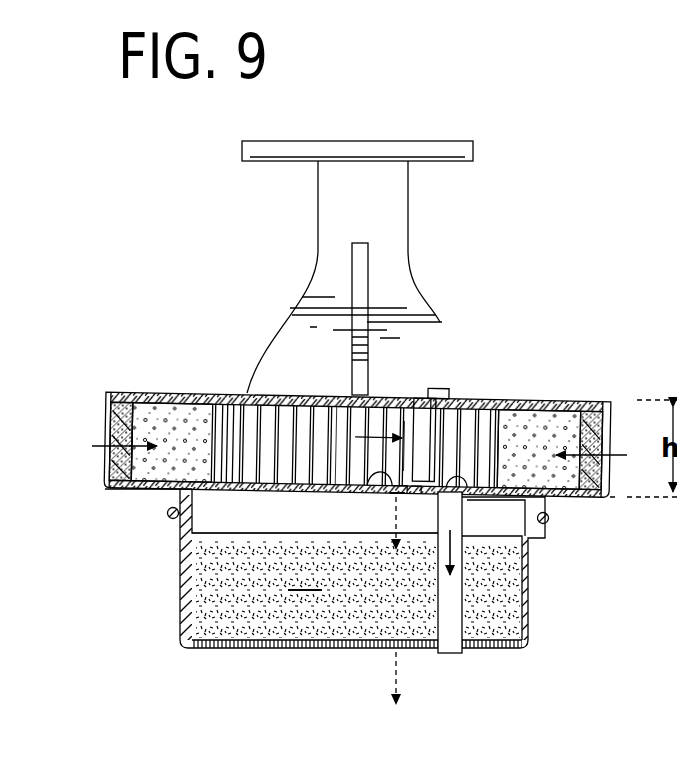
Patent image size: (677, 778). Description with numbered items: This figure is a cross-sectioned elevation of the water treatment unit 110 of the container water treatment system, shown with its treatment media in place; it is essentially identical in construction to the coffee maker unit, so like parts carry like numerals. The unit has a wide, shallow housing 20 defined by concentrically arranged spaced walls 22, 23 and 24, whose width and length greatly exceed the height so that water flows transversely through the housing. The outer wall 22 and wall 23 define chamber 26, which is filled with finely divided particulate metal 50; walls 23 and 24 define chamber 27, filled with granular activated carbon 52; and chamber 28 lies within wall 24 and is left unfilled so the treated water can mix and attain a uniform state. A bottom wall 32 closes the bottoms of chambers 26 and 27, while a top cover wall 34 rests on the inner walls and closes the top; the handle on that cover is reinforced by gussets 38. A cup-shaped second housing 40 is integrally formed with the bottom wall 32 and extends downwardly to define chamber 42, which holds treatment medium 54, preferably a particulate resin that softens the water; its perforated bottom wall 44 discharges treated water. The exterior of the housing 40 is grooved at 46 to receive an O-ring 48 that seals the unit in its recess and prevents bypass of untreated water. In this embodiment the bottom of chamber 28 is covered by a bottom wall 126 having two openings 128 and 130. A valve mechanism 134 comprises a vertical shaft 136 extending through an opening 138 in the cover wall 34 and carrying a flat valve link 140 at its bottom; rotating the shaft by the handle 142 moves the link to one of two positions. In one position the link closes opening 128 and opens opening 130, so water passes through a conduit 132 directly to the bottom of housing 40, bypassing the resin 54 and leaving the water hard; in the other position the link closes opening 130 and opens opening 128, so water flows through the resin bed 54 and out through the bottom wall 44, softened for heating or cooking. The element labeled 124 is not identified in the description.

The hub/column of cutter head 124 is at (318, 200).
The gussets 38 is at (368, 258).
The outer wall 22 is at (105, 412).
The finely divided particulate metal 50 is at (120, 427).
The wall 23 is at (128, 462).
The chamber 26 is at (123, 402).
The chamber 27 is at (165, 406).
The wall 24 is at (212, 433).
The chamber 28 is at (250, 413).
The valve mechanism 134 is at (335, 395).
The vertical shaft 136 is at (417, 395).
The opening 138 is at (402, 396).
The handle 142 is at (448, 393).
The top cover wall 34 is at (480, 402).
The finely divided particulate granular activated carbon 52 is at (519, 430).
The housing 20 is at (616, 401).
The water treatment unit 110 is at (585, 392).
The second housing 40 is at (528, 560).
The bottom wall 44 is at (230, 648).
The treatment medium 54 is at (358, 589).
The opening 130 is at (462, 522).
The circumferential groove 46 is at (530, 523).
The O-ring 48 is at (547, 518).
The chamber 42 is at (185, 522).
The bottom wall 32 is at (153, 493).
The bottom wall 126 is at (262, 493).
The flat valve link 140 is at (394, 495).
The opening 128 is at (395, 497).
The conduit 132 is at (438, 522).